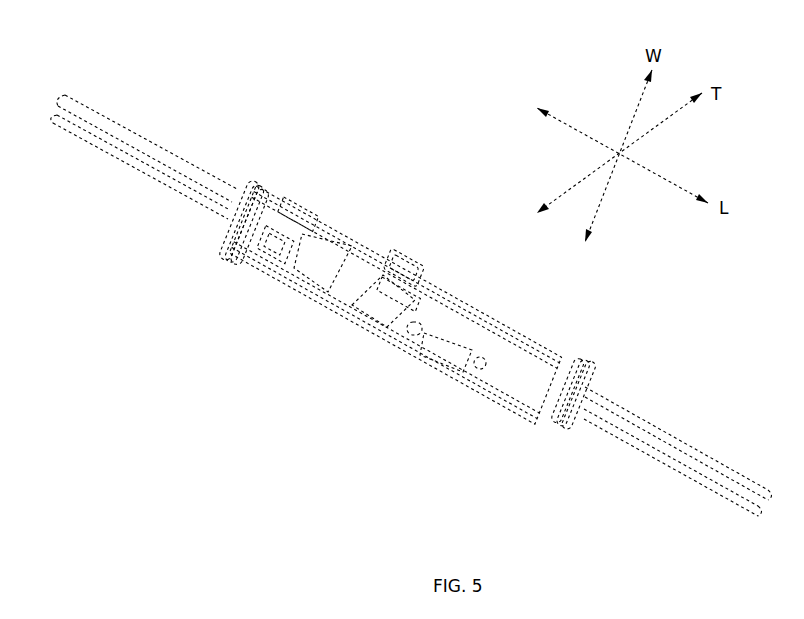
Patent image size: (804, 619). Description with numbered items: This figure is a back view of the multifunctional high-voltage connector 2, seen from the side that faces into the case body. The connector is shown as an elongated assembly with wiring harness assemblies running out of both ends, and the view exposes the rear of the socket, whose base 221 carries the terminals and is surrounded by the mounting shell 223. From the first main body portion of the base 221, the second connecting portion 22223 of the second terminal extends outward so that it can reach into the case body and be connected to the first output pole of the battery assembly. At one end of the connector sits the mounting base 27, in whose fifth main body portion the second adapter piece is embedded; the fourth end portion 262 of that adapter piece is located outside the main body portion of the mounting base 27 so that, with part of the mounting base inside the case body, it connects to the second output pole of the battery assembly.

The multifunctional high-voltage connector 2 is at (411, 261).
The mounting base 27 is at (257, 280).
The fourth end portion 262 is at (304, 196).
The mounting shell 223 is at (338, 270).
The second connecting portion 22223 is at (407, 255).
The base 221 is at (400, 326).